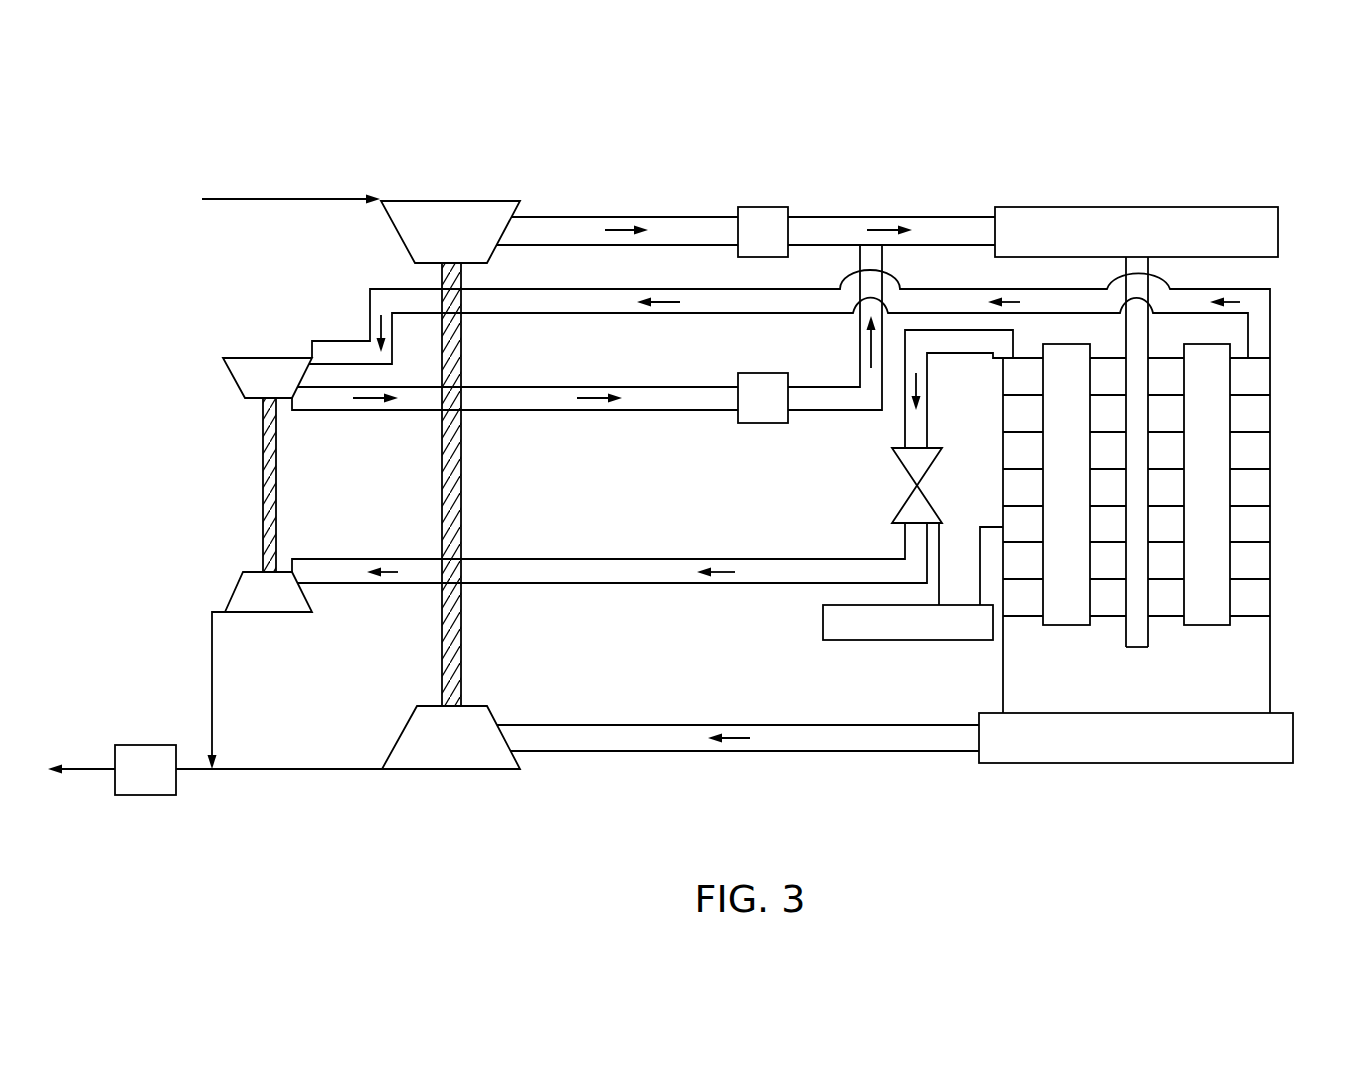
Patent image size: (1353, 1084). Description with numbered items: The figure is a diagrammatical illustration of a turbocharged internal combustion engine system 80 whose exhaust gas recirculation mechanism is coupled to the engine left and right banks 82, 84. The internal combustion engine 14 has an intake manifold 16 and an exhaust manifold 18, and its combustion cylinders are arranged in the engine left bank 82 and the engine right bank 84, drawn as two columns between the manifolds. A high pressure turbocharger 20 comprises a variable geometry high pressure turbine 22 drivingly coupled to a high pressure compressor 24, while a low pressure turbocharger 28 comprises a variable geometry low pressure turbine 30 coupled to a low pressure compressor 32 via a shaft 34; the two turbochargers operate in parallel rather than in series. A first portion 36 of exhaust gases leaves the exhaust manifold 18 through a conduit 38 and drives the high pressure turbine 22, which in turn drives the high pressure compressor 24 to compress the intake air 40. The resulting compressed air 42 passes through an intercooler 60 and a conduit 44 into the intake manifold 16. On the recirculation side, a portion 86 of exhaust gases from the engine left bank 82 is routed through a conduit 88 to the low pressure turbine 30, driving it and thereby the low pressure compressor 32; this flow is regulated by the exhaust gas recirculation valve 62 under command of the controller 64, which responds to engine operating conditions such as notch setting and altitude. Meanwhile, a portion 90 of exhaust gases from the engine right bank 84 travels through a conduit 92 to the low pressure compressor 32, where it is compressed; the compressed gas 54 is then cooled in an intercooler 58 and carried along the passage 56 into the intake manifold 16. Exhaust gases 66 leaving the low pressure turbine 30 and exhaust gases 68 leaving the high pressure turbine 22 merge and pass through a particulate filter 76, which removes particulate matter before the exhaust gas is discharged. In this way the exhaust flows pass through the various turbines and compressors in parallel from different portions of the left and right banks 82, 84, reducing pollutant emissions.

The internal combustion engine 14 is at (1270, 452).
The intake manifold 16 is at (1280, 232).
The exhaust manifold 18 is at (1293, 738).
The high pressure turbocharger 20 is at (472, 491).
The high pressure turbine 22 is at (450, 769).
The high pressure compressor 24 is at (451, 201).
The low pressure turbocharger 28 is at (245, 478).
The low pressure turbine 30 is at (297, 612).
The low pressure compressor 32 is at (246, 358).
The shaft 34 is at (276, 518).
The first portion of exhaust gases 36 is at (744, 725).
The conduit 38 is at (660, 751).
The intake air 40 is at (224, 205).
The compressed air 42 is at (620, 228).
The conduit 44 is at (880, 228).
The compressed gas 54 is at (585, 397).
The EGR passage 56 is at (688, 387).
The intercooler 58 is at (763, 373).
The intercooler 60 is at (760, 207).
The exhaust gas recirculation valve 62 is at (933, 448).
The controller 64 is at (905, 640).
The exhaust gases 66 is at (212, 685).
The exhaust gases 68 is at (300, 769).
The particulate filter 76 is at (146, 795).
The turbocharged internal combustion engine system 80 is at (1246, 142).
The engine left bank 82 is at (1066, 625).
The engine right bank 84 is at (1207, 625).
The portion of exhaust gases 86 is at (725, 572).
The conduit 88 is at (605, 558).
The portion of exhaust gases 90 is at (665, 298).
The conduit 92 is at (530, 313).